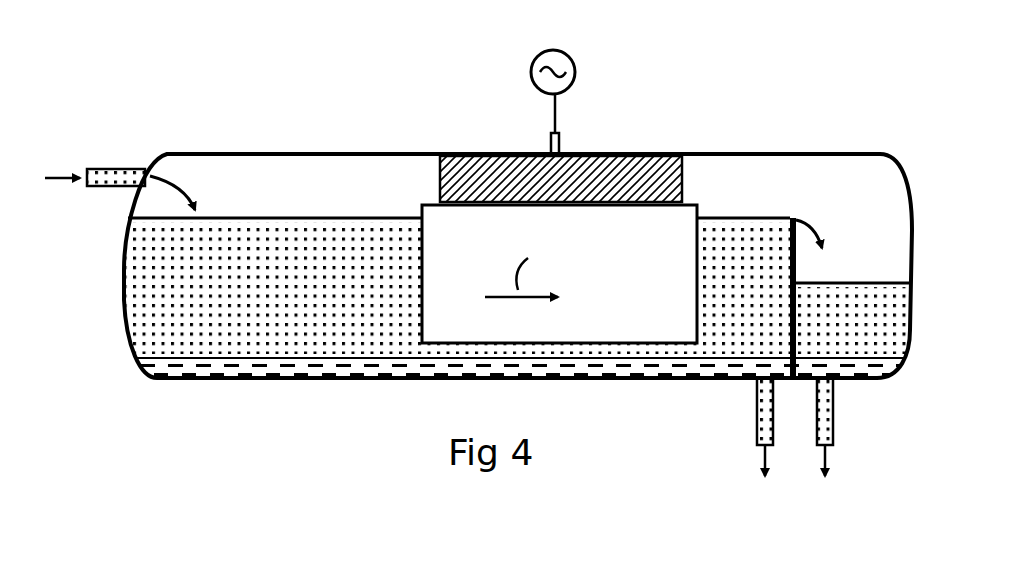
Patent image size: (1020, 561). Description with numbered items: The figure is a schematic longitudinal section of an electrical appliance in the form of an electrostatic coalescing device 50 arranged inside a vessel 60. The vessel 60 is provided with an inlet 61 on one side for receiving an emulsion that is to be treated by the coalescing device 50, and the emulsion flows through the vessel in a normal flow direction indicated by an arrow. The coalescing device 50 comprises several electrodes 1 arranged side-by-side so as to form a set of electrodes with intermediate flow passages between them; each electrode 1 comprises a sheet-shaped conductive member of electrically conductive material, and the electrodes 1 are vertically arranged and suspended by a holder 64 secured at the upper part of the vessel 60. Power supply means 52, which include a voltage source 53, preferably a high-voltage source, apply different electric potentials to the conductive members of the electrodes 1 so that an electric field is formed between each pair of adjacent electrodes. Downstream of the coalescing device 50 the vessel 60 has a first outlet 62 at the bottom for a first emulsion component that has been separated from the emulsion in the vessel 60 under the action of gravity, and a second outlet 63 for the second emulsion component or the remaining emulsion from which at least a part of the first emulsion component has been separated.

The electrode 1 is at (685, 216).
The electrostatic coalescing device 50 is at (415, 182).
The power supply means 52 is at (582, 116).
The voltage source 53 is at (566, 56).
The vessel 60 is at (833, 155).
The inlet 61 is at (117, 168).
The first outlet 62 is at (757, 412).
The second outlet 63 is at (833, 412).
The holder 64 is at (484, 155).